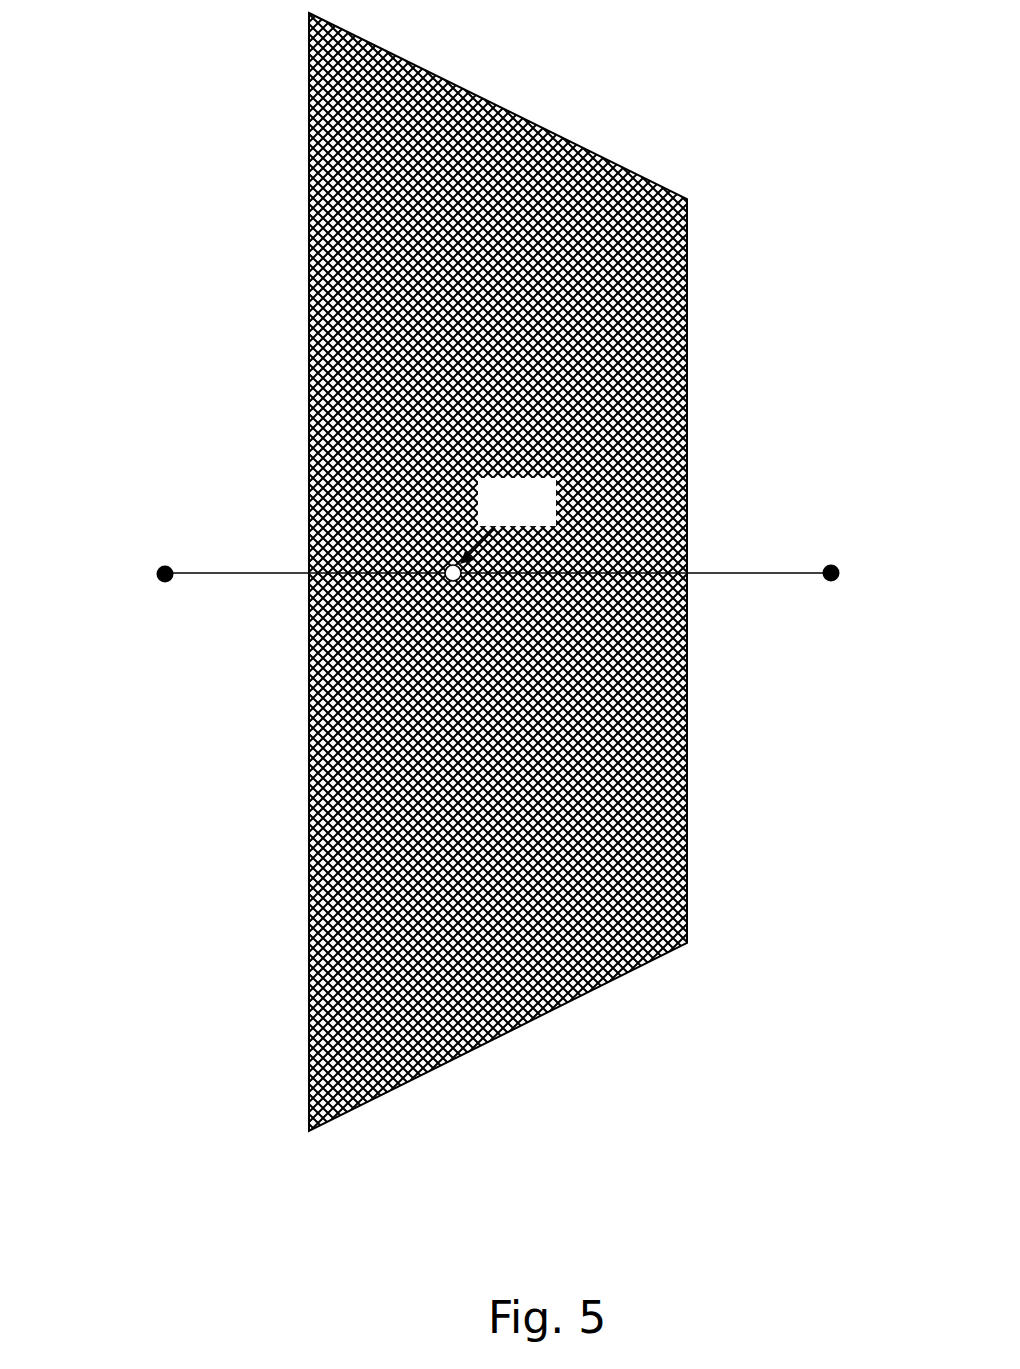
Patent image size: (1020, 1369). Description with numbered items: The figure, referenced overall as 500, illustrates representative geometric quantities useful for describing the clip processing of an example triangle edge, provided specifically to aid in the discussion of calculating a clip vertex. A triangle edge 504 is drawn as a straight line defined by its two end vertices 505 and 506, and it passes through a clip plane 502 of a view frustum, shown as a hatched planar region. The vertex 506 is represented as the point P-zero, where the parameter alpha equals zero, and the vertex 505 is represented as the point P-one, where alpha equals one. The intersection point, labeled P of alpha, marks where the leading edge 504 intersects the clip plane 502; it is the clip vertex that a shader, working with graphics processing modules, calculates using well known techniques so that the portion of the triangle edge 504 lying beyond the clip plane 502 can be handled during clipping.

The line-plane intersection diagram 500 is at (214, 1201).
The clip plane 502 is at (300, 311).
The triangle edge 504 is at (715, 566).
The vertex 505 is at (829, 559).
The vertex 506 is at (153, 560).